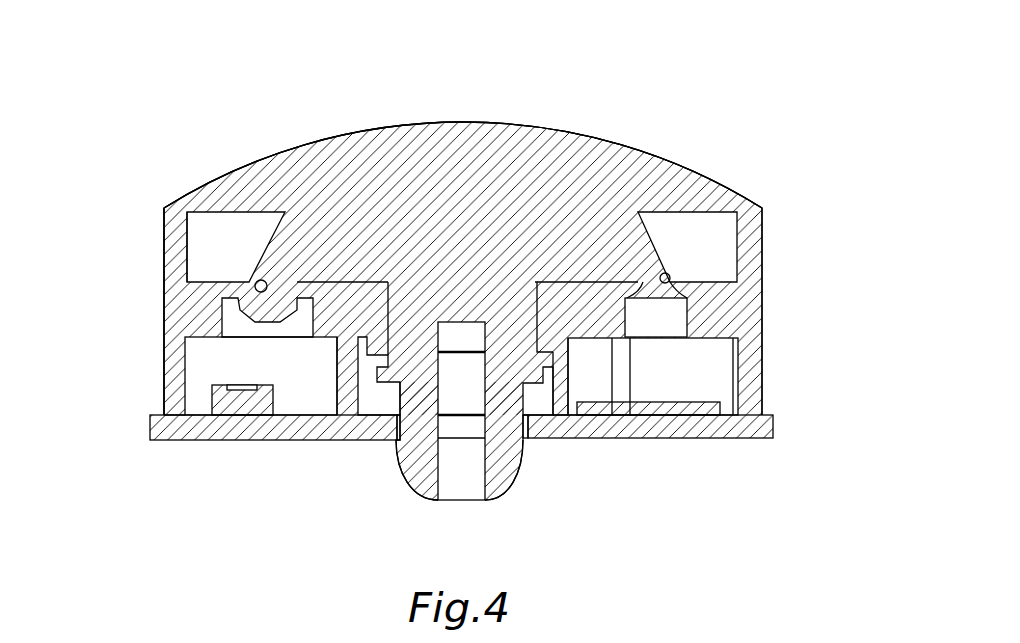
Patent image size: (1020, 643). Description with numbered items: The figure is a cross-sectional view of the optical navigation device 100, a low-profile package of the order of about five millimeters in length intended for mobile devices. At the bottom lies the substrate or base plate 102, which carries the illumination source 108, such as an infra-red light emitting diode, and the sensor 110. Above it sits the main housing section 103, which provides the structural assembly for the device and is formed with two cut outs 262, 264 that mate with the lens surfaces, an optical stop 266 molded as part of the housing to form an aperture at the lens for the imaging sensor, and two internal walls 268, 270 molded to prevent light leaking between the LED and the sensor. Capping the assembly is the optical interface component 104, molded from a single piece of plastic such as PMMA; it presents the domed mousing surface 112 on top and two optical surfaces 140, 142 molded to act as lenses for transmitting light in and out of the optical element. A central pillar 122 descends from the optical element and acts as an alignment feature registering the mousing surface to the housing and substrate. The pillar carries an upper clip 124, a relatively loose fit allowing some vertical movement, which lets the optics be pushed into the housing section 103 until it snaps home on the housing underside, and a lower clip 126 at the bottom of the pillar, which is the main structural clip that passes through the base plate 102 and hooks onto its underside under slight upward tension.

The optical navigation device 100 is at (167, 99).
The substrate/base plate 102 is at (218, 432).
The main housing section 103 is at (182, 310).
The optical interface component 104 is at (592, 180).
The illumination source 108 is at (252, 398).
The sensor 110 is at (680, 402).
The mousing surface 112 is at (407, 123).
The central pillar 122 is at (508, 330).
The upper clip 124 is at (537, 383).
The lower clip 126 is at (507, 452).
The optical surface 140 is at (262, 290).
The optical surface 142 is at (660, 280).
The cut out 262 is at (228, 362).
The cut out 264 is at (710, 358).
The optical stop 266 is at (658, 303).
The internal wall 268 is at (343, 387).
The internal wall 270 is at (560, 370).